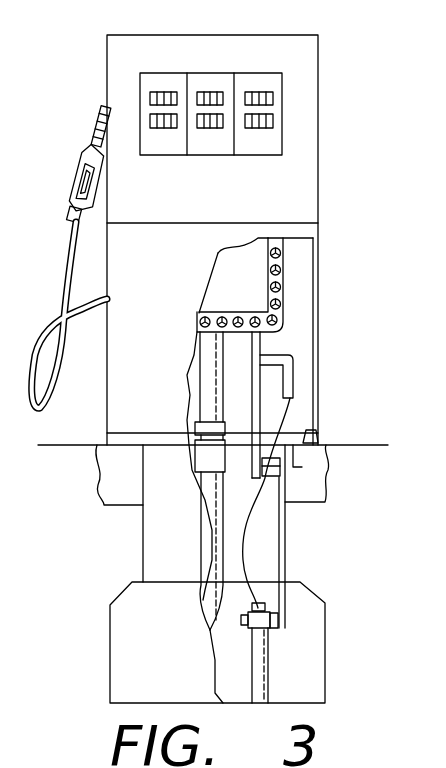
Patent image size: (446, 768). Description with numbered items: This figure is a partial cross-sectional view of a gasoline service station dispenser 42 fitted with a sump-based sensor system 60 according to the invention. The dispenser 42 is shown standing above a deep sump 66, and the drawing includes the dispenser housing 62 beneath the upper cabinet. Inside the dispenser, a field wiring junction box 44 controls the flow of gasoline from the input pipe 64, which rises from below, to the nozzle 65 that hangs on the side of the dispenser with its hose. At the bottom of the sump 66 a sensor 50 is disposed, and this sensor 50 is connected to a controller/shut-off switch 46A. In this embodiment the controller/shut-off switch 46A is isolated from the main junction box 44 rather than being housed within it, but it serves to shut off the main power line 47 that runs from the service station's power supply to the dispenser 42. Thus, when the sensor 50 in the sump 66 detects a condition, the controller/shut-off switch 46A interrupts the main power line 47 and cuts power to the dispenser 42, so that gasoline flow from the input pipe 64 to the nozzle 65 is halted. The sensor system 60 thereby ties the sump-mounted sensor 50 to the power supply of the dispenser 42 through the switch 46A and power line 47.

The dispenser 42 is at (224, 197).
The field wiring junction box 44 is at (244, 288).
The controller/shut-off switch 46A is at (293, 371).
The main power line 47 is at (262, 412).
The sensor 50 is at (263, 657).
The sensor system 60 is at (338, 356).
The dispenser housing 62 is at (158, 385).
The input pipe 64 is at (210, 600).
The nozzle 65 is at (72, 224).
The sump 66 is at (232, 661).